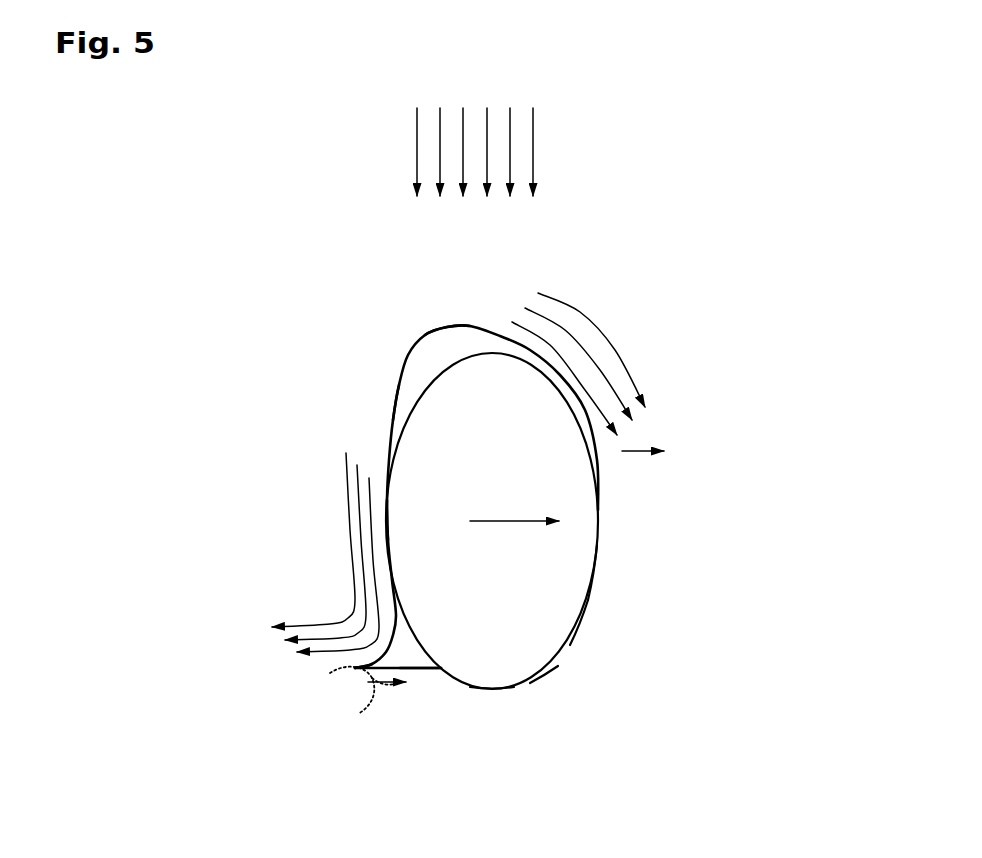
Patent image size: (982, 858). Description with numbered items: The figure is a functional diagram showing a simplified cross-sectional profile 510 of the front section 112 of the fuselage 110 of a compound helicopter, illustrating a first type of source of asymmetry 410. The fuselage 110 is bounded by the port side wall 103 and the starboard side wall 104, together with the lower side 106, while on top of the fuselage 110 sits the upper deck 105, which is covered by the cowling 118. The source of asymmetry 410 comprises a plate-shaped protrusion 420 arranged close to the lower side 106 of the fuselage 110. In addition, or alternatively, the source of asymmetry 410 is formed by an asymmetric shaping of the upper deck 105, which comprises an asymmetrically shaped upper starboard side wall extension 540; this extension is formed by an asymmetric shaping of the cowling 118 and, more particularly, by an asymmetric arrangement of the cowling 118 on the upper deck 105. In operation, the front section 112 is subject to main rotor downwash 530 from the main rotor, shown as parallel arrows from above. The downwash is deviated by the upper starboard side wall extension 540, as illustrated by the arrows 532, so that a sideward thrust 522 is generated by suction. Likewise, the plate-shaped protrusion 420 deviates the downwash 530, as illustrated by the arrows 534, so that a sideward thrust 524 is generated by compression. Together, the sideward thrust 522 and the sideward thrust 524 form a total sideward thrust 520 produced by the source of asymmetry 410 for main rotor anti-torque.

The port side wall 103 is at (591, 606).
The starboard side wall 104 is at (385, 520).
The upper deck 105 is at (393, 371).
The lower side 106 is at (492, 709).
The fuselage 110 is at (547, 672).
The front section 112 is at (611, 578).
The cowling 118 is at (417, 338).
The source of asymmetry 410 is at (397, 403).
The plate-shaped protrusion 420 is at (415, 653).
The cross-sectional profile 510 is at (591, 669).
The total sideward thrust 520 is at (520, 521).
The sideward thrust 522 is at (635, 451).
The sideward thrust 524 is at (378, 682).
The main rotor downwash 530 is at (543, 152).
The arrows 532 is at (600, 330).
The arrows 534 is at (347, 563).
The upper starboard side wall extension 540 is at (437, 336).